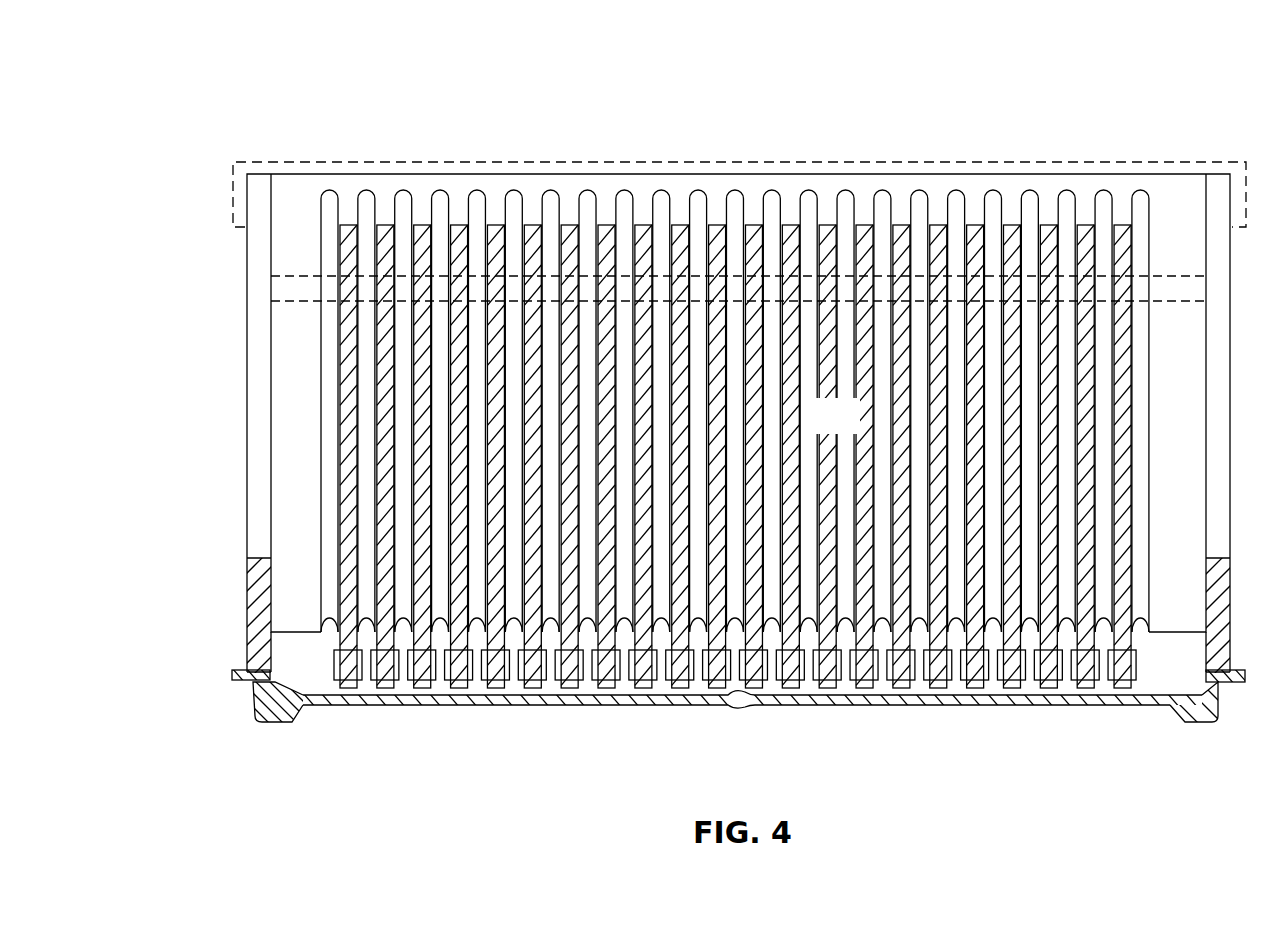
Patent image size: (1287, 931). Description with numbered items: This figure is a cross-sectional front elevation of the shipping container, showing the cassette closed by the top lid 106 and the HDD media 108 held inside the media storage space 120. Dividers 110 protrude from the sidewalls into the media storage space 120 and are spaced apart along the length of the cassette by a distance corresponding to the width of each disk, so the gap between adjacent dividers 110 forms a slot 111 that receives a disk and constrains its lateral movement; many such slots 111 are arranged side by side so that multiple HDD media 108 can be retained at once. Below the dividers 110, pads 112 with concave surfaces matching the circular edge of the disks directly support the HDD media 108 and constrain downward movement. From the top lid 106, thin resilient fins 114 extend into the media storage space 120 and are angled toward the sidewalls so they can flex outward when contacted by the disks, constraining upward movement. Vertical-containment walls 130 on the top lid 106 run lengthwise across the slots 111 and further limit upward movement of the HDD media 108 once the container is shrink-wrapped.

The top lid 106 is at (875, 156).
The HDD media 108 is at (345, 239).
The dividers 110 is at (328, 191).
The slot 111 is at (347, 205).
The pads 112 is at (334, 665).
The fins 114 is at (292, 312).
The media storage space 120 is at (850, 429).
The vertical-containment walls 130 is at (292, 312).